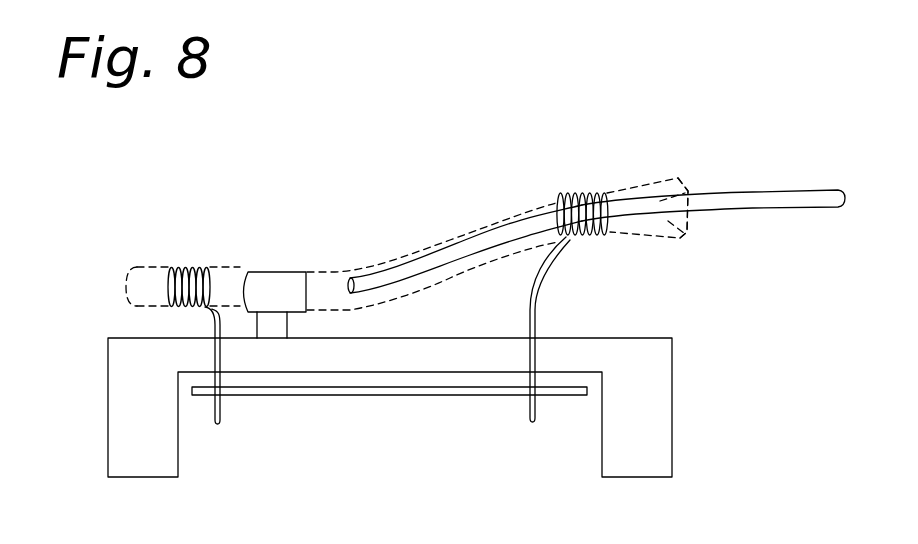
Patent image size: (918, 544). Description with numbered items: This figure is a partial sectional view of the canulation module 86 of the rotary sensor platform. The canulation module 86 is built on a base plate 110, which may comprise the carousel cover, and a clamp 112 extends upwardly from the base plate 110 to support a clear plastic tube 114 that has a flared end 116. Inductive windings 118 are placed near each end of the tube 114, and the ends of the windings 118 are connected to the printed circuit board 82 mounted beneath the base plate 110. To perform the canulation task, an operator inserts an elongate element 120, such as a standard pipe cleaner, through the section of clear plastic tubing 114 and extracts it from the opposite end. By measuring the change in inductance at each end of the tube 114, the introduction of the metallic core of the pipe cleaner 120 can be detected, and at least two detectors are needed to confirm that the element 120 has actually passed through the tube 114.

The printed circuit board 82 is at (407, 395).
The canulation module 86 is at (134, 208).
The base plate 110 is at (108, 339).
The clamp 112 is at (279, 271).
The clear plastic tube 114 is at (340, 301).
The flared end 116 is at (680, 238).
The inductive windings 118 is at (588, 200).
The elongate element 120 is at (753, 192).